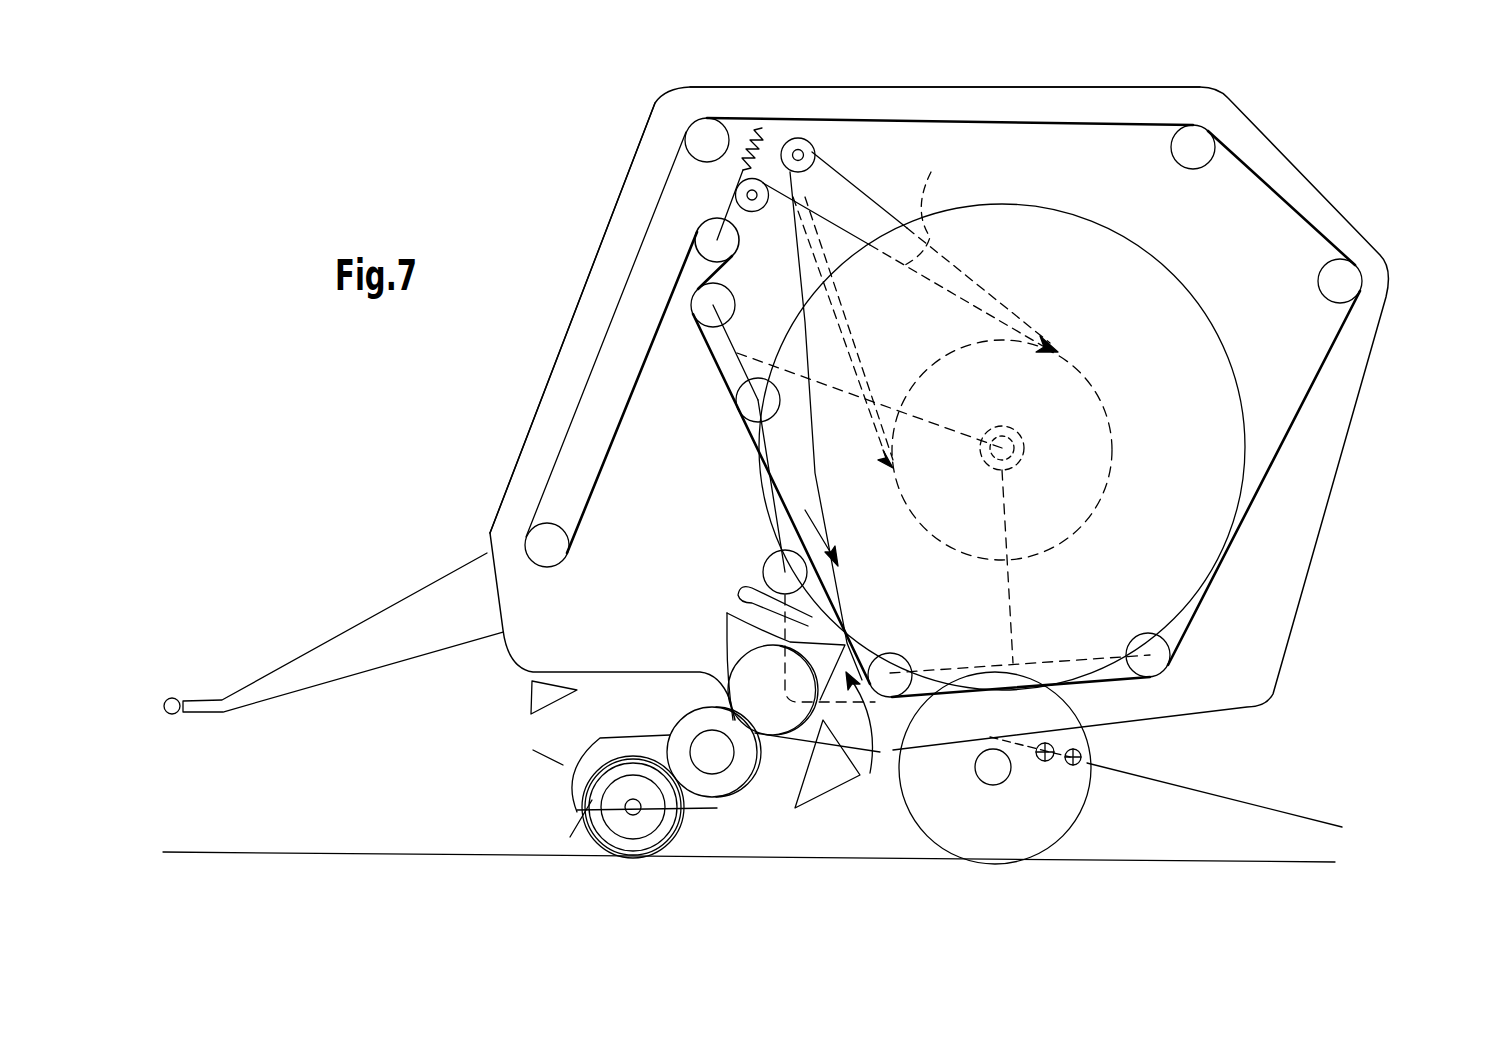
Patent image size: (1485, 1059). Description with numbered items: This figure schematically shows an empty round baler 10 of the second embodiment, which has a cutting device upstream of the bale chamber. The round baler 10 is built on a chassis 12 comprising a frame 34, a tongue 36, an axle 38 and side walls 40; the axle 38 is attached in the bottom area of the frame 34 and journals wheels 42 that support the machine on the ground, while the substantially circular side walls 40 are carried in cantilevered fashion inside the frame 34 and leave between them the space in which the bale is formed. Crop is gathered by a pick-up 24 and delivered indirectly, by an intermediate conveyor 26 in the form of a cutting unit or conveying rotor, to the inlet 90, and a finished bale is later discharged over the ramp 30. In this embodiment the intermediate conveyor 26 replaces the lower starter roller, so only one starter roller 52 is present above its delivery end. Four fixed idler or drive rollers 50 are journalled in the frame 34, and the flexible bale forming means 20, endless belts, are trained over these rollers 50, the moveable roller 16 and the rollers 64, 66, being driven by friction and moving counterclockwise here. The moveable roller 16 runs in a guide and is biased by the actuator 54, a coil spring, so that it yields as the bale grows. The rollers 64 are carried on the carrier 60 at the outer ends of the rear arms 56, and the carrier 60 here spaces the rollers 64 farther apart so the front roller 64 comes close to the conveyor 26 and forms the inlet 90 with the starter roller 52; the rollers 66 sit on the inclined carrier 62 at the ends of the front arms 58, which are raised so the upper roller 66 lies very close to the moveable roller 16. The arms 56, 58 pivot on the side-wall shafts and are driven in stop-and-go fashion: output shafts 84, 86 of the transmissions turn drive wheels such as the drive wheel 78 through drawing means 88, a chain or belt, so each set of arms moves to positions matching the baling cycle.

The round baler 10 is at (360, 375).
The chassis 12 is at (522, 400).
The moveable roller 16 is at (696, 243).
The flexible bale forming means 20 is at (612, 466).
The pick-up 24 is at (527, 798).
The intermediate conveyor 26 is at (765, 785).
The ramp 30 is at (1235, 797).
The frame 34 is at (527, 450).
The tongue 36 is at (400, 600).
The axle 38 is at (995, 782).
The side walls 40 is at (1080, 280).
The wheels 42 is at (1067, 822).
The idler or drive rollers 50 is at (712, 120).
The starter roller 52 is at (768, 570).
The actuator 54 is at (754, 125).
The rear arms 56 is at (1015, 580).
The front arms 58 is at (880, 388).
The carrier 60 is at (1080, 657).
The carrier 62 is at (730, 340).
The rollers 64 is at (890, 657).
The rollers 66 is at (742, 408).
The drive wheel 78 is at (1105, 378).
The output shaft 84 is at (799, 148).
The output shaft 86 is at (736, 195).
The drawing means 88 is at (877, 196).
The inlet 90 is at (865, 742).